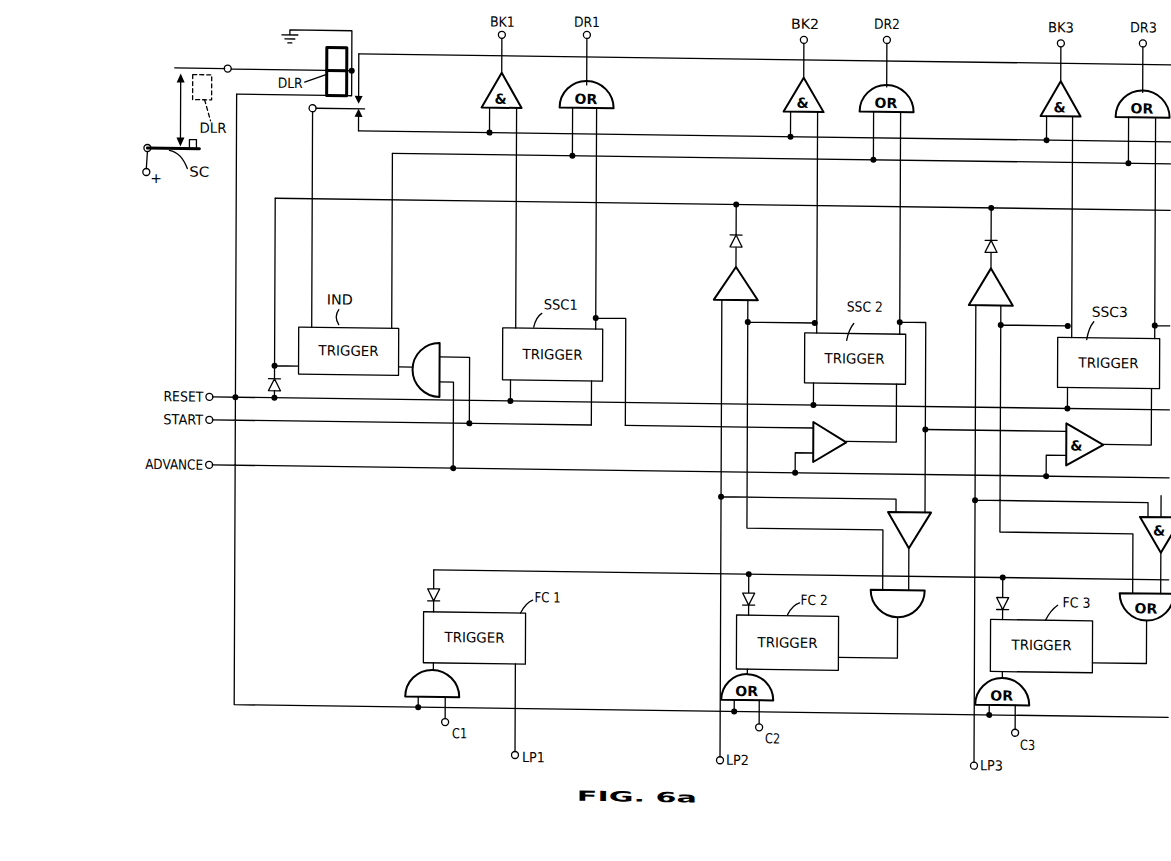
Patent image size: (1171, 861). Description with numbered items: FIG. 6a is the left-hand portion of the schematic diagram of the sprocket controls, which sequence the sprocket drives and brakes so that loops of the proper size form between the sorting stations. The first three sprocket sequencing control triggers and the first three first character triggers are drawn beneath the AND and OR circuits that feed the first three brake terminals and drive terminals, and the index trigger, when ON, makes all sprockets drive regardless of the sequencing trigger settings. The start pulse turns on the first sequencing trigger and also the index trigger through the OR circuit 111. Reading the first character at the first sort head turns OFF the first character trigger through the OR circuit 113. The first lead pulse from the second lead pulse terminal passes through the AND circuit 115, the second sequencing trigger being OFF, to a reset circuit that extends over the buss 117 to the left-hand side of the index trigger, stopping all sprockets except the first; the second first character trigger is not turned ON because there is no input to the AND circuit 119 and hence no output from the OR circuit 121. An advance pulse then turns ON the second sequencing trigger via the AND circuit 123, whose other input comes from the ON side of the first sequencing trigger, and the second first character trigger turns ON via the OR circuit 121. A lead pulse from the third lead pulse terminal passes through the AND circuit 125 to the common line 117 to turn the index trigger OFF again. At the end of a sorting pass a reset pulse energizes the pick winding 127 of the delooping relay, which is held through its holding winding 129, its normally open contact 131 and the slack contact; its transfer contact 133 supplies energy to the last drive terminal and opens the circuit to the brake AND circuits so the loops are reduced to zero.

The OR circuit 111 is at (433, 337).
The OR circuit 113 is at (462, 684).
The AND circuit 115 is at (744, 265).
The buss 117 is at (710, 195).
The AND circuit 119 is at (918, 528).
The OR circuit 121 is at (915, 600).
The AND circuit 123 is at (848, 426).
The AND circuit 125 is at (998, 263).
The pick winding 127 is at (302, 93).
The holding winding 129 is at (327, 51).
The normally open contact 131 is at (190, 65).
The contact 133 is at (365, 104).